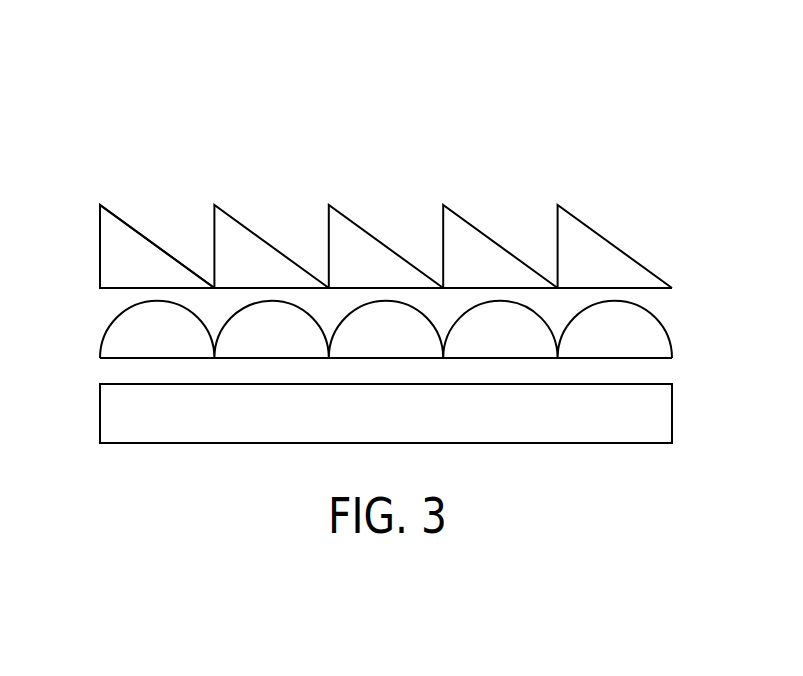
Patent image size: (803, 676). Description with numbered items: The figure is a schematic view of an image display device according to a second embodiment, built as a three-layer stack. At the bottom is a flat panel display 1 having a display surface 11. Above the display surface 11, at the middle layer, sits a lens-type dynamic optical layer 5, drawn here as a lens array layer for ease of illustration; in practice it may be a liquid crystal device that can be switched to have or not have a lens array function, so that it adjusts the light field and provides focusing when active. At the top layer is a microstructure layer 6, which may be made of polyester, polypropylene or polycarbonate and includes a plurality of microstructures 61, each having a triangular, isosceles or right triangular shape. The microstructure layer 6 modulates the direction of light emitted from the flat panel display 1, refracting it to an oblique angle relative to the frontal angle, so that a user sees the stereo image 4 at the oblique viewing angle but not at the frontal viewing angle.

The flat panel display 1 is at (681, 416).
The display surface 11 is at (120, 383).
The stereo image 4 is at (396, 62).
The lens-type dynamic optical layer 5 is at (680, 335).
The microstructure layer 6 is at (653, 264).
The microstructures 61 is at (116, 238).